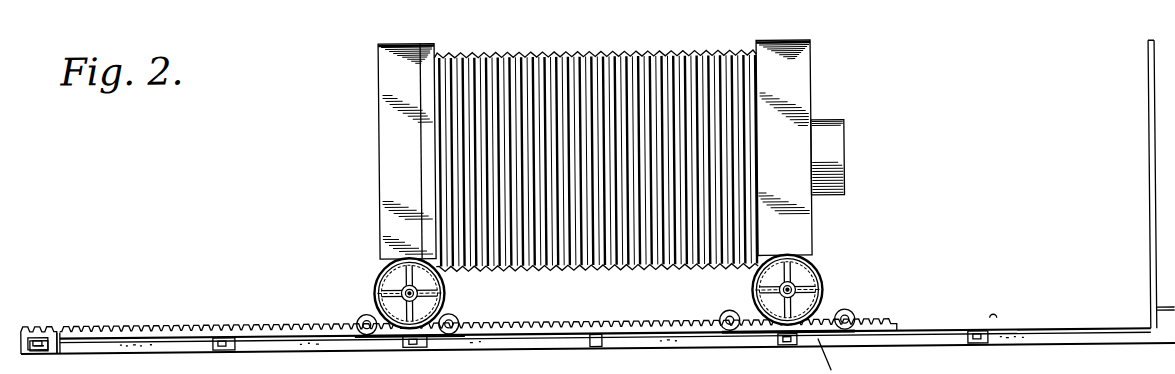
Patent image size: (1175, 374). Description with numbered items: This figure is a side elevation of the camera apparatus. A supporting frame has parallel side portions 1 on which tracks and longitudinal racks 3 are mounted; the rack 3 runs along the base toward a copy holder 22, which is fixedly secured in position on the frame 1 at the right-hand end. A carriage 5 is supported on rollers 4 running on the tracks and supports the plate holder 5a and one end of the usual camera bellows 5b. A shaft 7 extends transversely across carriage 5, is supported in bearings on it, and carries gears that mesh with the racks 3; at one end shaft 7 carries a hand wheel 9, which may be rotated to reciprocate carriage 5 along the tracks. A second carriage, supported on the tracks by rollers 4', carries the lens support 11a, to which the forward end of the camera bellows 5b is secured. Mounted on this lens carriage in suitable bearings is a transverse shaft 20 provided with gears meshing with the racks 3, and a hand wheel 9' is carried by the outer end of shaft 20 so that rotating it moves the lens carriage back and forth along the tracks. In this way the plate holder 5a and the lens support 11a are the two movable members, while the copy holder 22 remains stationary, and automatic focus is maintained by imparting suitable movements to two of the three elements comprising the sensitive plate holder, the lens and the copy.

The side portion of supporting frame 1 is at (1110, 348).
The longitudinal rack 3 is at (291, 328).
The rollers 4 is at (423, 315).
The rollers 4' is at (808, 309).
The carriage 5 is at (430, 334).
The plate holder 5a is at (393, 203).
The camera bellows 5b is at (580, 278).
The shaft 7 is at (425, 300).
The hand wheel 9 is at (395, 293).
The hand wheel 9' is at (823, 285).
The lens support 11a is at (805, 78).
The transverse shaft 20 is at (768, 301).
The copy holder 22 is at (1151, 219).